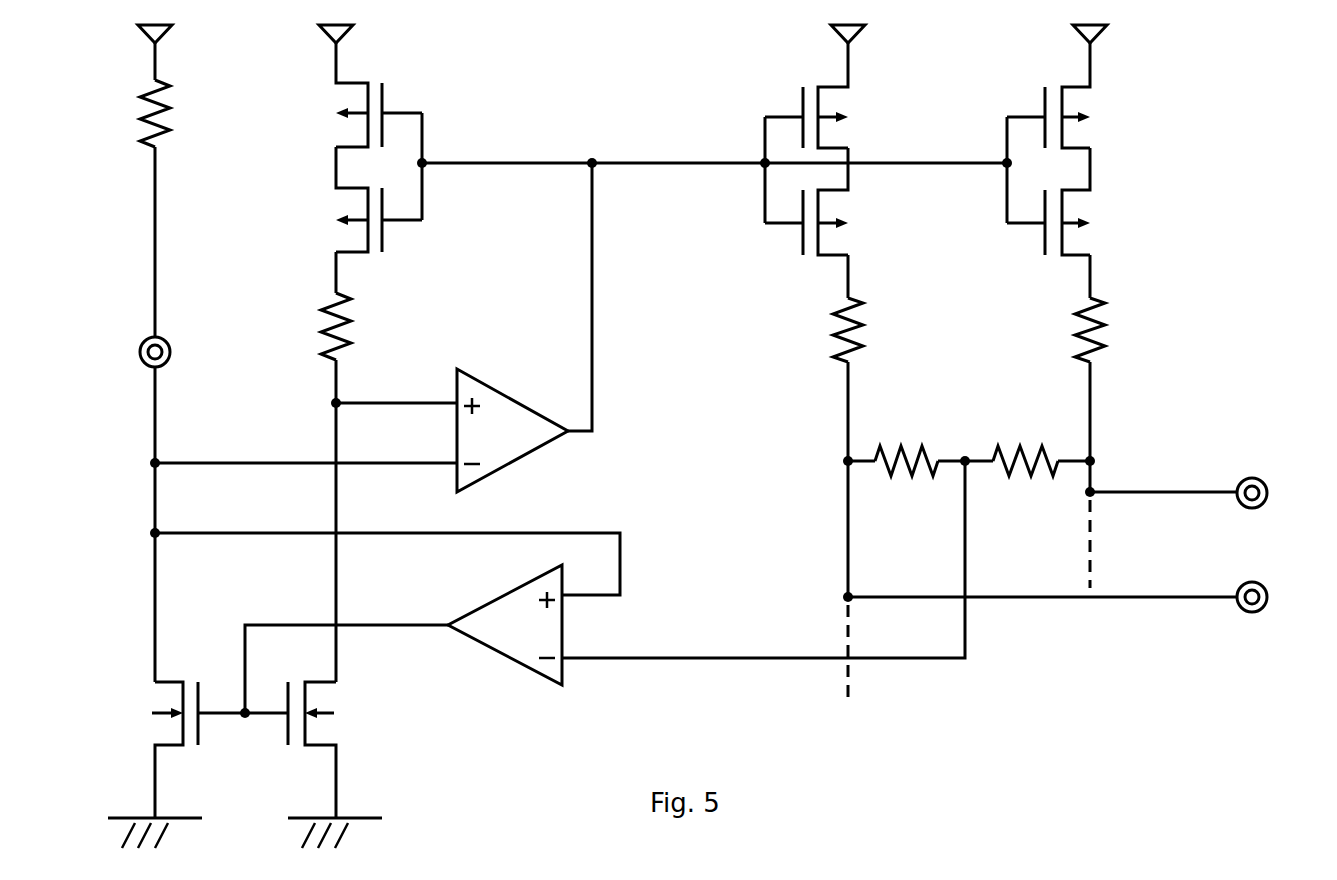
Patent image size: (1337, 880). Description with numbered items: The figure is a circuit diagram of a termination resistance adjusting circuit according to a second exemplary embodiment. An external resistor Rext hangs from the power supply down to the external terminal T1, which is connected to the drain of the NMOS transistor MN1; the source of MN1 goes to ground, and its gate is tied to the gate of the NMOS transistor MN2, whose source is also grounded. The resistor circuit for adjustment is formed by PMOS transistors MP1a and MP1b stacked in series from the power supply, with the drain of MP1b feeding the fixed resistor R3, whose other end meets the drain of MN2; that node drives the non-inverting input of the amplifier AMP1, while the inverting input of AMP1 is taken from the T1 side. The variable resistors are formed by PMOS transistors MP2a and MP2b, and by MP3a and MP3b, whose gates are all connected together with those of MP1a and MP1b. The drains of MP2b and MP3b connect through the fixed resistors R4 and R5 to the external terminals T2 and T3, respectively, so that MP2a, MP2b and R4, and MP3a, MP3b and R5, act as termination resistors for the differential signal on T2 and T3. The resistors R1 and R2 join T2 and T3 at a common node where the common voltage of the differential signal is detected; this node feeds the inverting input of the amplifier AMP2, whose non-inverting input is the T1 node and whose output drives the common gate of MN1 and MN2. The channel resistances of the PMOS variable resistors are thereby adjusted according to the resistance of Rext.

The external resistor Rext is at (143, 117).
The external terminal T1 is at (132, 353).
The external terminal T2 is at (1080, 597).
The external terminal T3 is at (1201, 493).
The PMOS transistor MP1a is at (339, 95).
The PMOS transistor MP1b is at (339, 182).
The PMOS transistor MP2a is at (844, 95).
The PMOS transistor MP2b is at (844, 186).
The PMOS transistor MP3a is at (1087, 95).
The PMOS transistor MP3b is at (1087, 186).
The NMOS transistor MN1 is at (164, 765).
The NMOS transistor MN2 is at (325, 765).
The resistor R1 is at (906, 481).
The resistor R2 is at (1027, 481).
The fixed resistor R3 is at (356, 327).
The fixed resistor R4 is at (868, 358).
The fixed resistor R5 is at (1110, 358).
The amplifier AMP1 is at (470, 373).
The amplifier AMP2 is at (547, 684).